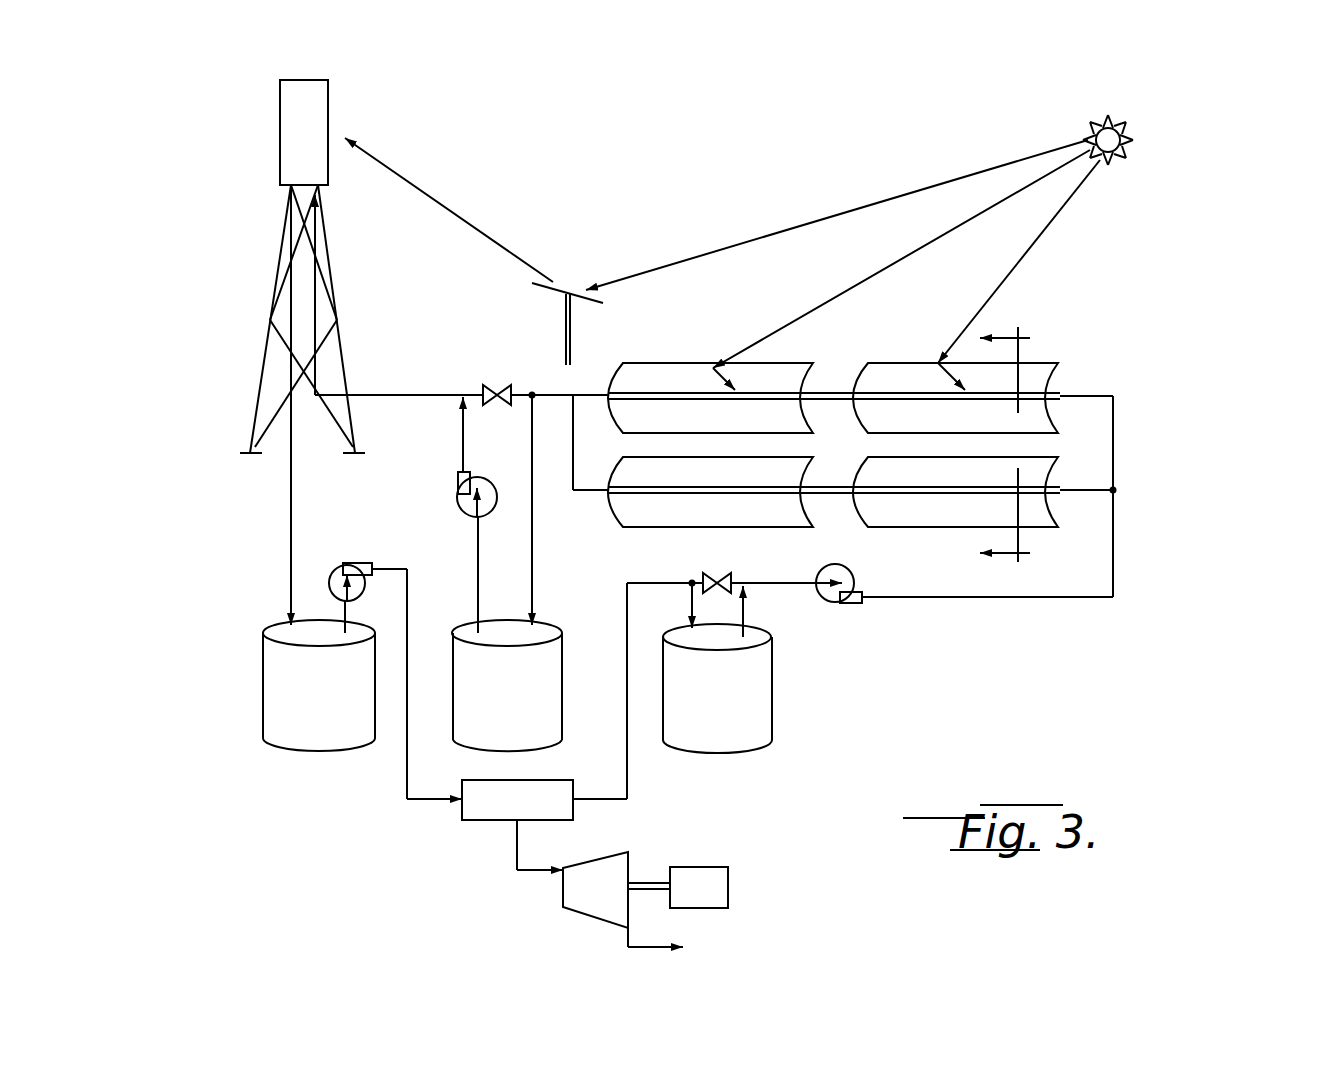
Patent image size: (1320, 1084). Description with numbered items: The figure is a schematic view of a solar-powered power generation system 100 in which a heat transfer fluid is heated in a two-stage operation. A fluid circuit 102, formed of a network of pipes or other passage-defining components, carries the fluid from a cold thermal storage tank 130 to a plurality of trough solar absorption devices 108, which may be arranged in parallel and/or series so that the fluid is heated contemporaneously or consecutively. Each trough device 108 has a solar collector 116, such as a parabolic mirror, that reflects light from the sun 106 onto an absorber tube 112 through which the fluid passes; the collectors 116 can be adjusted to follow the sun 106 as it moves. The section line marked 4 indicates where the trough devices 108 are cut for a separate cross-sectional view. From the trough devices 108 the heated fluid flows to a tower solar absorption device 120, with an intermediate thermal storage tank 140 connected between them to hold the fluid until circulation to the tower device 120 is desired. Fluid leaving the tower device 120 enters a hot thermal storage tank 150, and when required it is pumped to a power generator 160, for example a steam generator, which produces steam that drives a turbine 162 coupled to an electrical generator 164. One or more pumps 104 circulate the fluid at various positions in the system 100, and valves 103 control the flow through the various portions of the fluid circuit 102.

The solar-powered power generation system 100 is at (1130, 265).
The fluid circuit 102 is at (1117, 462).
The valve 103 is at (497, 385).
The pump 104 is at (465, 495).
The sun 106 is at (1125, 135).
The trough solar absorption device 108 is at (868, 435).
The absorber tube 112 is at (775, 393).
The solar collector 116 is at (660, 362).
The tower solar absorption device 120 is at (250, 178).
The cold thermal storage tank 130 is at (765, 697).
The intermediate thermal storage tank 140 is at (465, 633).
The hot thermal storage tank 150 is at (268, 665).
The power generator 160 is at (470, 815).
The turbine 162 is at (570, 905).
The electrical generator 164 is at (710, 875).
The section line 4- 4 is at (1016, 452).